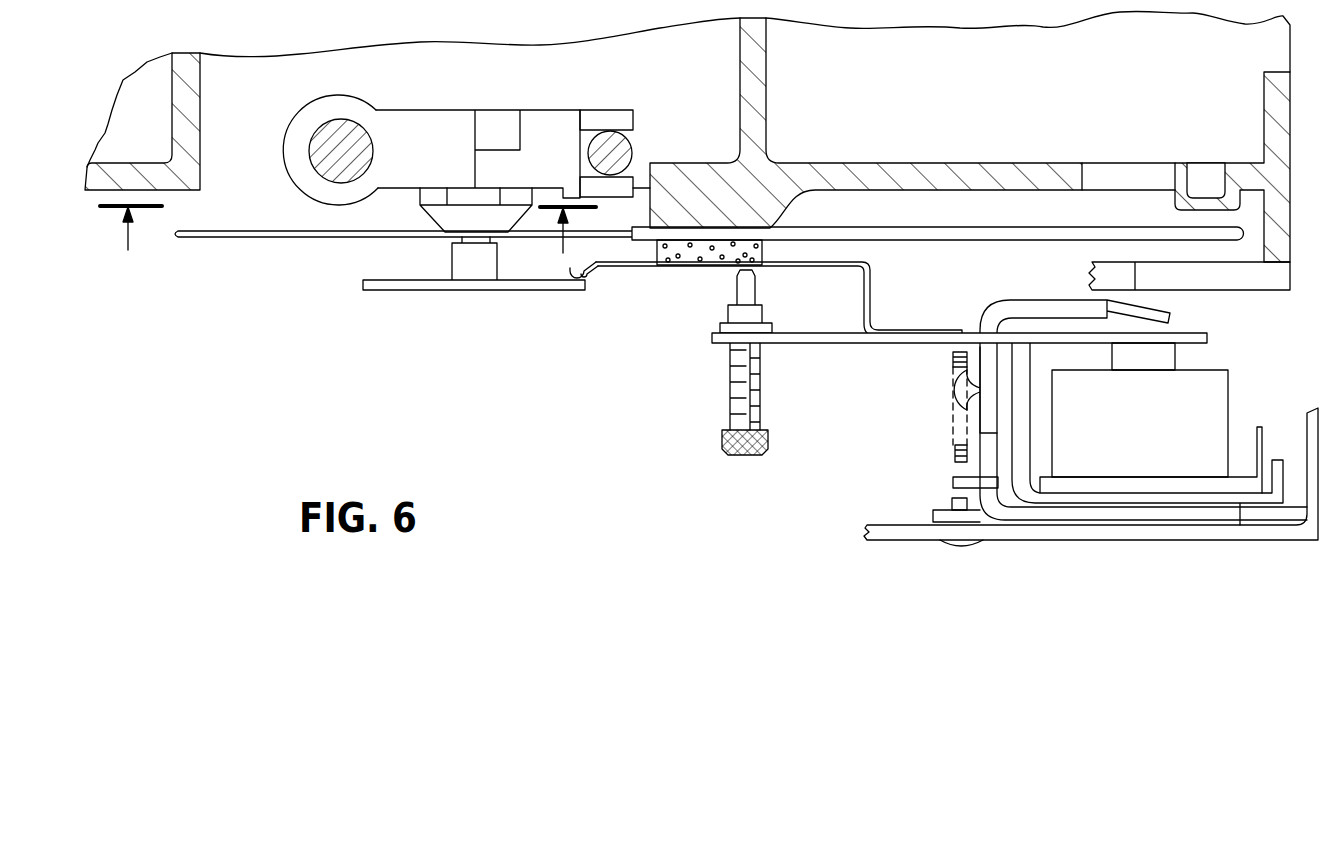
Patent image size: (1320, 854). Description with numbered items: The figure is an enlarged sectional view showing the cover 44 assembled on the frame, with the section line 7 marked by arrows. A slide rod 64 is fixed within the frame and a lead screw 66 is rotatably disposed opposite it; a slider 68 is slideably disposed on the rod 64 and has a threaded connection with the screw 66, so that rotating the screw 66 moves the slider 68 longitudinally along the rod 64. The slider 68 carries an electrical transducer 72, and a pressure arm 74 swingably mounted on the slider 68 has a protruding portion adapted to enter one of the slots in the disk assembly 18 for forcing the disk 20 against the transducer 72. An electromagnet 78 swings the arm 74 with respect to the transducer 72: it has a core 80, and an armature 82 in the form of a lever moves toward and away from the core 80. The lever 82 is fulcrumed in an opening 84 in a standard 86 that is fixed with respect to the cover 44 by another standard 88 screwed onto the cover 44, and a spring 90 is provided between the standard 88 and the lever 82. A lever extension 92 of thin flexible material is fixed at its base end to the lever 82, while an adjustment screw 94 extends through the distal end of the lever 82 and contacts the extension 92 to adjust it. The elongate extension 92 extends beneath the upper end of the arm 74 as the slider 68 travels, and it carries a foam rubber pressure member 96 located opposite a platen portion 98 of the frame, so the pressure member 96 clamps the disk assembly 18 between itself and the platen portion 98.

The section line 7— 7 is at (348, 236).
The disk assembly 18 is at (1064, 242).
The disk 20 is at (266, 238).
The cover 44 is at (893, 522).
The slide rod 64 is at (628, 136).
The lead screw 66 is at (322, 124).
The slider 68 is at (420, 108).
The electrical transducer 72 is at (422, 218).
The pressure arm 74 is at (541, 292).
The electromagnet 78 is at (1230, 390).
The core 80 is at (1176, 356).
The armature 82 is at (1200, 330).
The opening 84 is at (986, 325).
The standard 86 is at (1013, 298).
The standard 88 is at (942, 505).
The spring 90 is at (951, 366).
The lever extension 92 is at (866, 303).
The adjustment screw 94 is at (760, 382).
The foam rubber pressure member 96 is at (770, 252).
The platen portion 98 is at (780, 222).